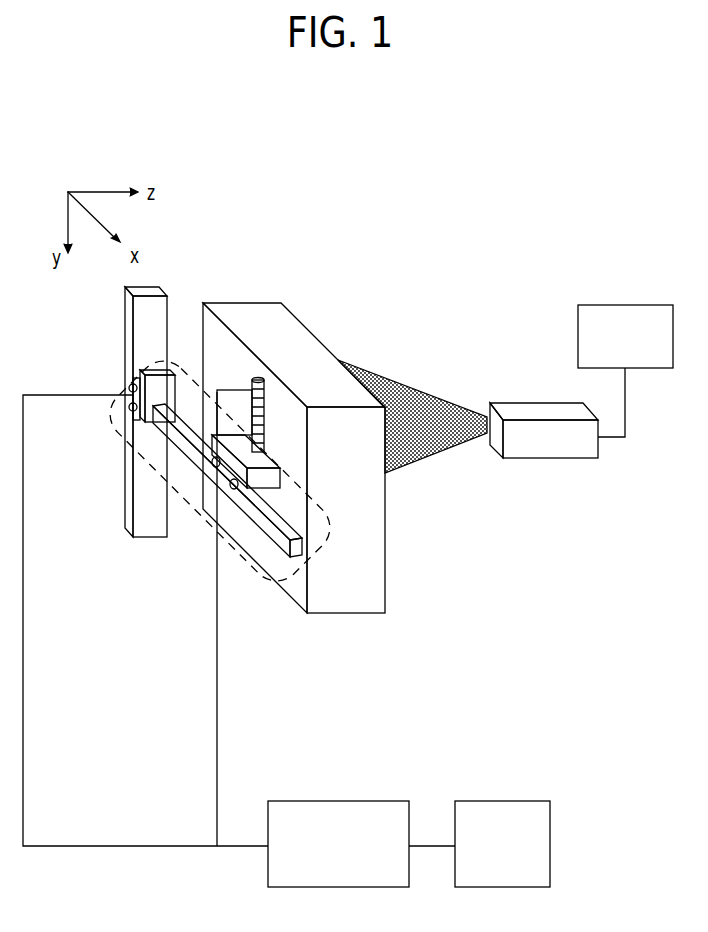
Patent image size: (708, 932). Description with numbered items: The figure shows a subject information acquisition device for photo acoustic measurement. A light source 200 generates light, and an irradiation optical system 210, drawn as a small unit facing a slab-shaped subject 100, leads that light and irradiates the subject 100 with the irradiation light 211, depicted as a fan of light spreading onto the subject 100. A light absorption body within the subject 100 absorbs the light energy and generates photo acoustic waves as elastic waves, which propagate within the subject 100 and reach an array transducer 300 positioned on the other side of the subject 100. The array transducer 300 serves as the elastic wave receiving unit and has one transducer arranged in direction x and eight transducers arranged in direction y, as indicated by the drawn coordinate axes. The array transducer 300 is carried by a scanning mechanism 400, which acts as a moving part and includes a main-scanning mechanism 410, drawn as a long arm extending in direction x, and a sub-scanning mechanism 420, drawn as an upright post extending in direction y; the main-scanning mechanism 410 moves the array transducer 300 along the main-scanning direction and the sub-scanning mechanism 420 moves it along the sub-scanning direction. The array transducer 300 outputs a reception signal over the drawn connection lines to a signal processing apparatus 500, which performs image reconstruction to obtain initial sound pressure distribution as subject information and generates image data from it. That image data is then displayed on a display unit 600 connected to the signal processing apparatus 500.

The subject 100 is at (331, 600).
The light source 200 is at (627, 305).
The irradiation optical system 210 is at (537, 402).
The irradiation light 211 is at (388, 390).
The array transducer 300 is at (252, 383).
The scanning mechanism 400 is at (152, 363).
The main-scanning mechanism 410 is at (206, 452).
The sub-scanning mechanism 420 is at (128, 423).
The signal processing apparatus 500 is at (367, 801).
The display unit 600 is at (522, 801).